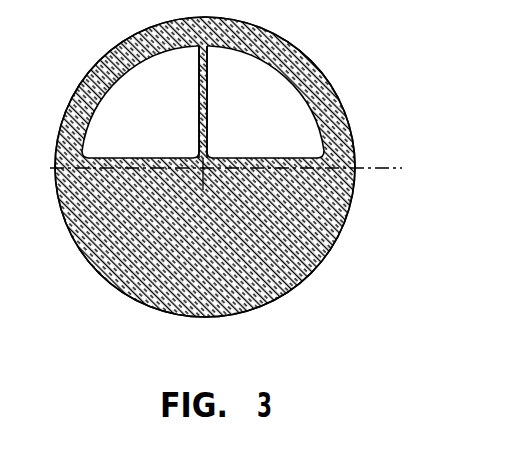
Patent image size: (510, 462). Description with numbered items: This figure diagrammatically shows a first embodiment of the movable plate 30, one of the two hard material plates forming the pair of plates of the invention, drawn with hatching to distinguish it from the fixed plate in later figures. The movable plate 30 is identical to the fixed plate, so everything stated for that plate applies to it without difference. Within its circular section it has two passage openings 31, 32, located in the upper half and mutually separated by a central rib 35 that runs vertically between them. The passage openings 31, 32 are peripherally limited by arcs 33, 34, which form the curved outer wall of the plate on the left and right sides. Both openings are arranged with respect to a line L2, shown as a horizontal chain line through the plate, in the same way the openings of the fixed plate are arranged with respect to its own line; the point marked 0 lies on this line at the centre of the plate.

The movable plate 30 is at (110, 240).
The passage opening 31 is at (189, 105).
The passage opening 32 is at (272, 132).
The arc 33 is at (128, 47).
The arc 34 is at (280, 62).
The rib 35 is at (203, 118).
The center point 0 is at (203, 168).
The line L2 is at (380, 172).